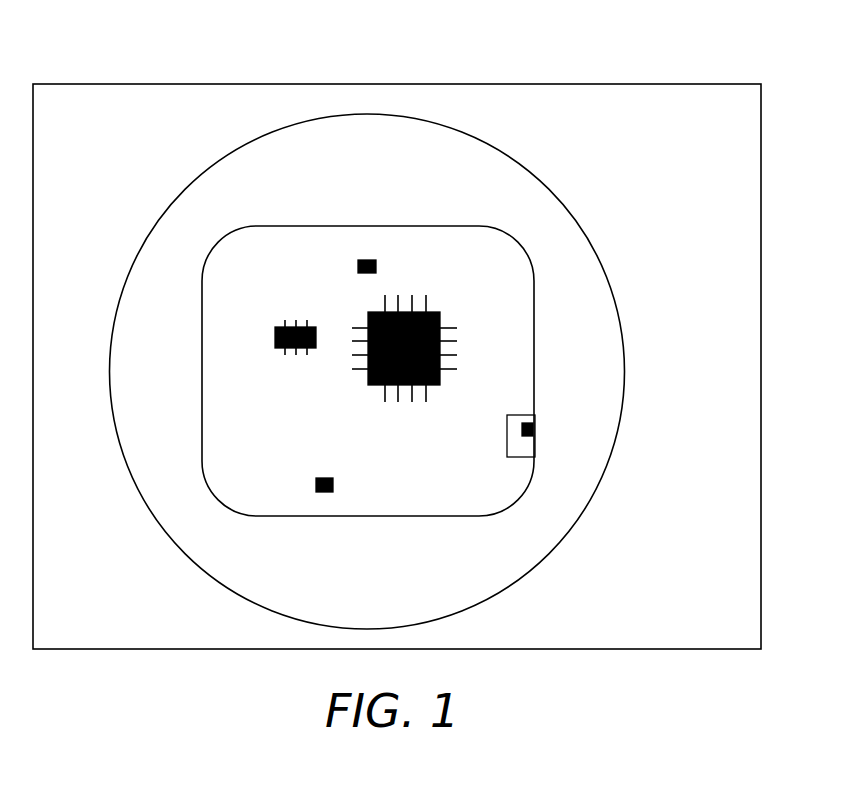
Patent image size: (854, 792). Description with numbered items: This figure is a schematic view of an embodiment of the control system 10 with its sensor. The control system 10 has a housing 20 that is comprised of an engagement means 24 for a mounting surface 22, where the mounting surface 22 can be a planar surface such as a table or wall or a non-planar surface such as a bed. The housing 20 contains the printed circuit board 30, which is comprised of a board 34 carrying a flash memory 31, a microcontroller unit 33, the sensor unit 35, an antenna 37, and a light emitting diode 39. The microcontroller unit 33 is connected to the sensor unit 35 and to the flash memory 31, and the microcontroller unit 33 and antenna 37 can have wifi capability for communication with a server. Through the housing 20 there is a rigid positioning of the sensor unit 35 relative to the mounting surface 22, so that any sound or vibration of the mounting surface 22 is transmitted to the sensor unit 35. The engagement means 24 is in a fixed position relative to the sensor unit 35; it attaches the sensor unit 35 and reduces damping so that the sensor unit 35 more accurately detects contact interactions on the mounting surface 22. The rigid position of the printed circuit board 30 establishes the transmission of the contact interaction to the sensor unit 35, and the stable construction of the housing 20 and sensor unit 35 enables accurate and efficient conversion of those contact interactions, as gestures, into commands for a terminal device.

The control system 10 is at (585, 48).
The housing 20 is at (621, 234).
The mounting surface 22 is at (107, 117).
The engagement means 24 is at (597, 489).
The printed circuit board 30 is at (207, 260).
The flash memory 31 is at (285, 350).
The microcontroller unit 33 is at (440, 312).
The board 34 is at (575, 366).
The sensor unit 35 is at (371, 258).
The antenna 37 is at (516, 433).
The light emitting diode 39 is at (320, 493).